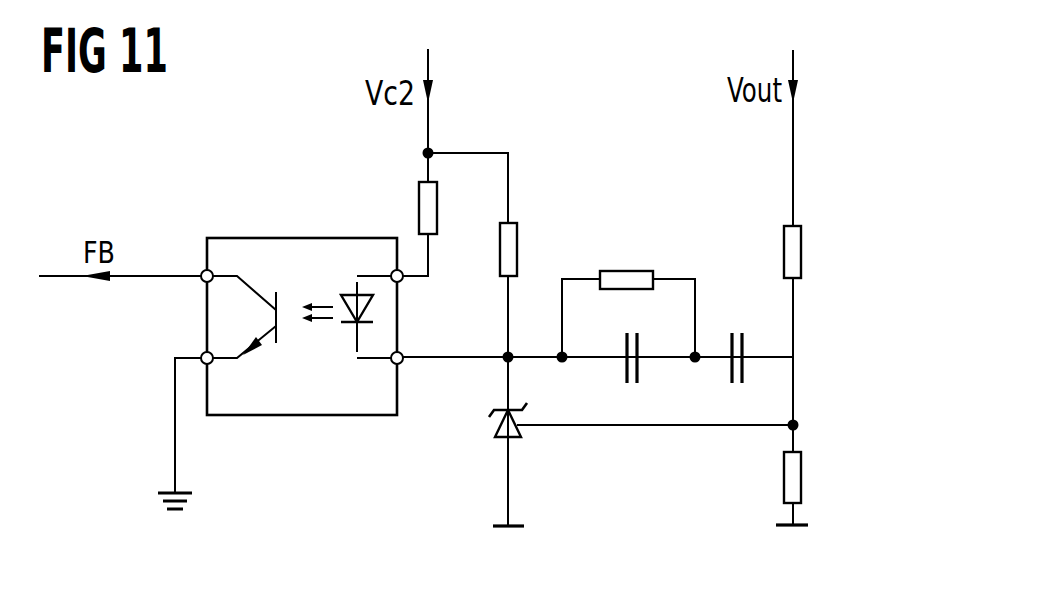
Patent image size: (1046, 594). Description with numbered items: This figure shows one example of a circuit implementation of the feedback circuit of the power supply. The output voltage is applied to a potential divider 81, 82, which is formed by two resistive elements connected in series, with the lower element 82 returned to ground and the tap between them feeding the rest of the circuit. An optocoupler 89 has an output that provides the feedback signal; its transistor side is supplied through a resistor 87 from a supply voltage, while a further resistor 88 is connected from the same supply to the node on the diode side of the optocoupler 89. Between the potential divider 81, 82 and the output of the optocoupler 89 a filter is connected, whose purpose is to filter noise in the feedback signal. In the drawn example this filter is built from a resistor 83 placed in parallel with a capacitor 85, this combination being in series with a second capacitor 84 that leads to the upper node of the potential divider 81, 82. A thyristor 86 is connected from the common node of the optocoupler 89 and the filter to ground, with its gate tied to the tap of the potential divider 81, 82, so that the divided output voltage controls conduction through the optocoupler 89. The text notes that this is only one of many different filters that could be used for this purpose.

The potential divider 81 is at (803, 250).
The potential divider 82 is at (803, 475).
The resistor 83 is at (626, 271).
The capacitor 84 is at (728, 368).
The capacitor 85 is at (623, 368).
The thyristor 86 is at (496, 426).
The resistor 87 is at (419, 207).
The resistor 88 is at (512, 222).
The optocoupler 89 is at (262, 237).